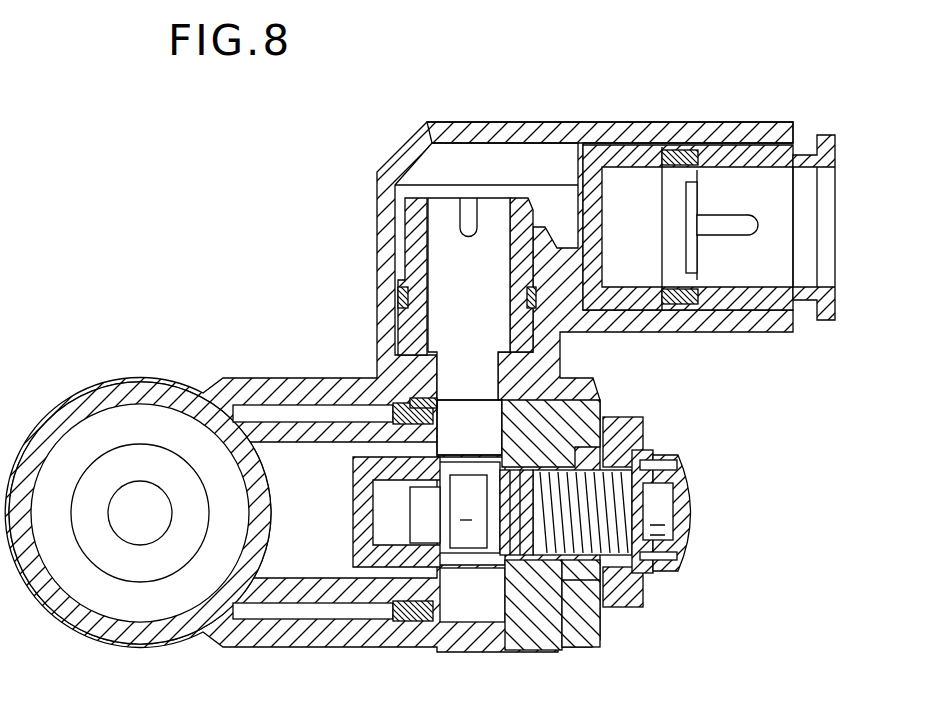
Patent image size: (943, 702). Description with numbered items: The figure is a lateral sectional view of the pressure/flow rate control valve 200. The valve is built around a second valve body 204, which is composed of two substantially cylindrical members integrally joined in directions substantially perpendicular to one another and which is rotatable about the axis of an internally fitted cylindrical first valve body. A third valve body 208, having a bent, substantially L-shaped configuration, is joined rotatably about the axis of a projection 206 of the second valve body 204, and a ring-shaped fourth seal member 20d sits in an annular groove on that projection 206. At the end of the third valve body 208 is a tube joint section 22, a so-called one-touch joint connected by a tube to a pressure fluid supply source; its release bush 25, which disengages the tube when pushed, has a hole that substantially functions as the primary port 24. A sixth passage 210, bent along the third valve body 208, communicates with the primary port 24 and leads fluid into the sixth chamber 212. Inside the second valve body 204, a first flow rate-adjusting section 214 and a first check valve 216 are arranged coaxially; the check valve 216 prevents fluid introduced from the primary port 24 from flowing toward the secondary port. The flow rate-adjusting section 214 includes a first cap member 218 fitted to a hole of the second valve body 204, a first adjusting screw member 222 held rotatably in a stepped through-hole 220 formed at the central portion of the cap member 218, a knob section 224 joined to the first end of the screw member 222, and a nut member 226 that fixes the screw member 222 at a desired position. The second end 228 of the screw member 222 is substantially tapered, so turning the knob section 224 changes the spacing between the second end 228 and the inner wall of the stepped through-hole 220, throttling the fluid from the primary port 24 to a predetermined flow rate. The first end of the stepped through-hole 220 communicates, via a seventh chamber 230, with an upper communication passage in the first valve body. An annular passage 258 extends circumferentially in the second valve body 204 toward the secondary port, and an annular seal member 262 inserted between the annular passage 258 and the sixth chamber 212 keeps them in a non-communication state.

The pressure/flow rate control valve 200 is at (262, 121).
The second valve body 204 is at (373, 630).
The projection 206 is at (413, 245).
The third valve body 208 is at (522, 132).
The fourth seal member 20d is at (398, 300).
The sixth passage 210 is at (492, 284).
The sixth chamber 212 is at (625, 374).
The first flow rate-adjusting section 214 is at (587, 617).
The first check valve 216 is at (377, 567).
The first cap member 218 is at (588, 617).
The stepped through-hole 220 is at (522, 570).
The first adjusting screw member 222 is at (585, 480).
The knob section 224 is at (700, 513).
The nut member 226 is at (627, 593).
The second end 228 is at (412, 568).
The seventh chamber 230 is at (335, 529).
The annular passage 258 is at (292, 404).
The annular seal member 262 is at (413, 400).
The tube joint section 22 is at (690, 168).
The primary port 24 is at (817, 273).
The release bush 25 is at (817, 135).